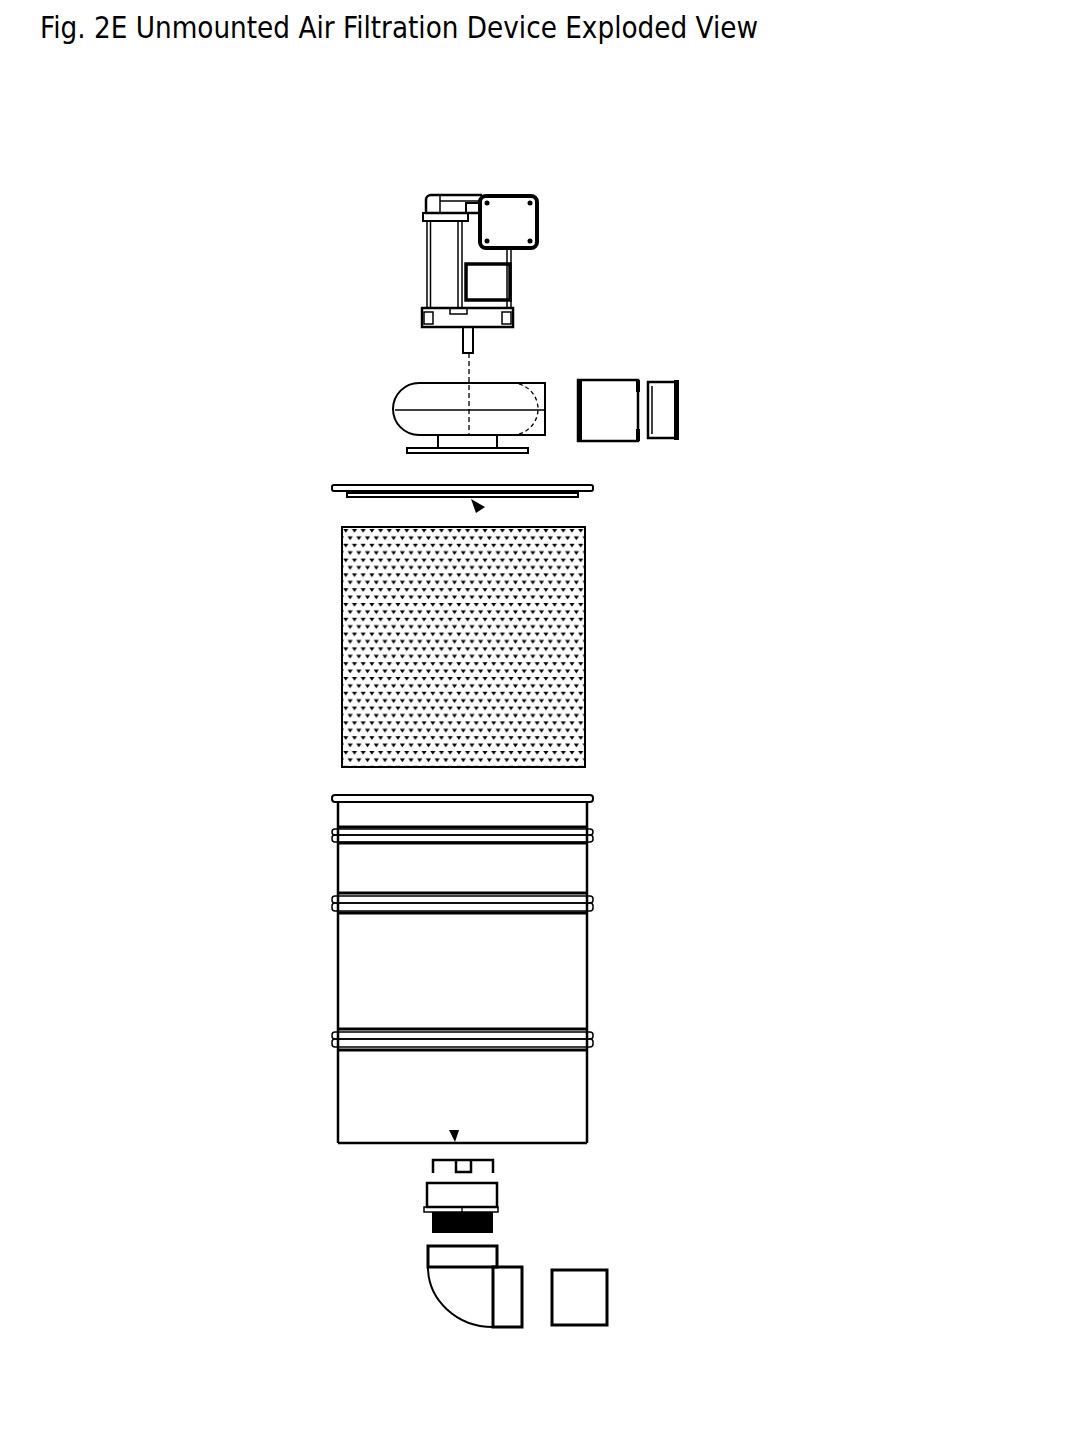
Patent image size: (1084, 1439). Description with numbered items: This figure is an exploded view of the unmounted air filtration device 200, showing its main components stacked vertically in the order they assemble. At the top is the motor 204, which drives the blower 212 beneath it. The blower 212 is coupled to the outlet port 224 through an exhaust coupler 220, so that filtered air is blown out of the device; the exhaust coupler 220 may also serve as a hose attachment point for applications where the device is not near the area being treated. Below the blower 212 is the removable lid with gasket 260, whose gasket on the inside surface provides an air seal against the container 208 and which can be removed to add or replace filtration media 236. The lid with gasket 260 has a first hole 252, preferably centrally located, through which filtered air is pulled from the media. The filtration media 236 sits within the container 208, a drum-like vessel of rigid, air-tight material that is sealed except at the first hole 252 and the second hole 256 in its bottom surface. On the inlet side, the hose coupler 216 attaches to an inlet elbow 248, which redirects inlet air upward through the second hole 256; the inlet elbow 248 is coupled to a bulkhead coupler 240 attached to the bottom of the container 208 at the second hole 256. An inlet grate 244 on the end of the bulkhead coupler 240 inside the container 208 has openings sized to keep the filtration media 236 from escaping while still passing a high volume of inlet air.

The unmounted air filtration device 200 is at (891, 98).
The motor 204 is at (447, 270).
The blower 212 is at (427, 400).
The exhaust coupler 220 is at (605, 393).
The outlet port 224 is at (668, 414).
The lid with gasket 260 is at (340, 483).
The first hole 252 is at (479, 508).
The filtration media 236 is at (342, 650).
The container 208 is at (358, 975).
The second hole 256 is at (454, 1133).
The inlet grate 244 is at (495, 1167).
The bulkhead coupler 240 is at (447, 1197).
The inlet elbow 248 is at (458, 1295).
The hose coupler 216 is at (580, 1302).